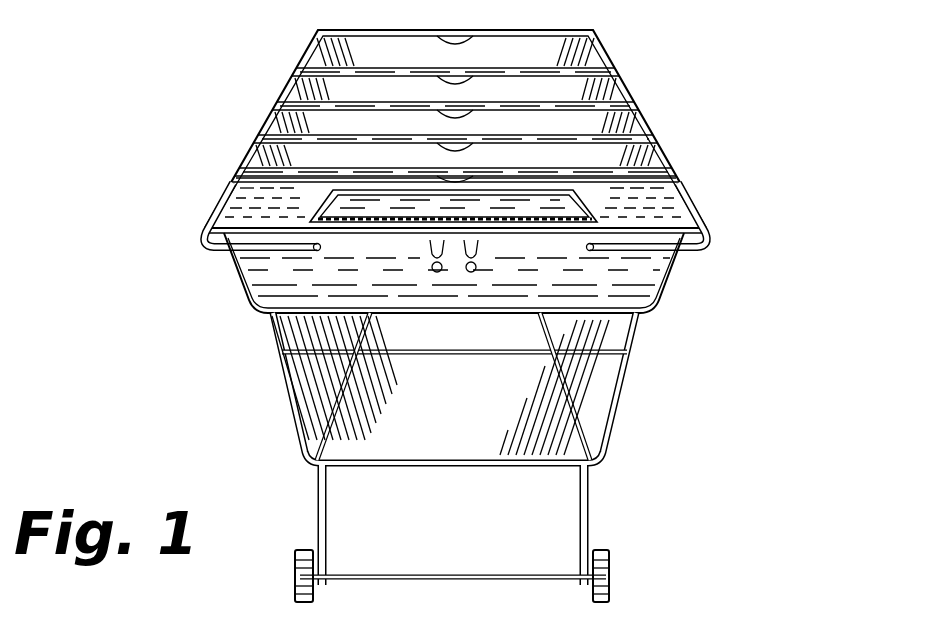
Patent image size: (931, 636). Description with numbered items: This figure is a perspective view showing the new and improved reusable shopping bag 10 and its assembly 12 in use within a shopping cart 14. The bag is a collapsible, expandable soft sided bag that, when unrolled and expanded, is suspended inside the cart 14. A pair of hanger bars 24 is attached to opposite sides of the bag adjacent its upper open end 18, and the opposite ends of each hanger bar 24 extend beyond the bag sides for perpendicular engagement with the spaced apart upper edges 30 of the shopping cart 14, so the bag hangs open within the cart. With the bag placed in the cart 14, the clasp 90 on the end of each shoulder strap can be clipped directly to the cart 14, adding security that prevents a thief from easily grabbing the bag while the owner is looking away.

The reusable shopping bag 10 is at (643, 120).
The assembly 12 is at (246, 75).
The shopping cart 14 is at (283, 382).
The upper open end 18 is at (293, 147).
The hanger bars 24 is at (673, 172).
The spaced apart upper edges 30 is at (263, 121).
The clasp 90 is at (237, 184).